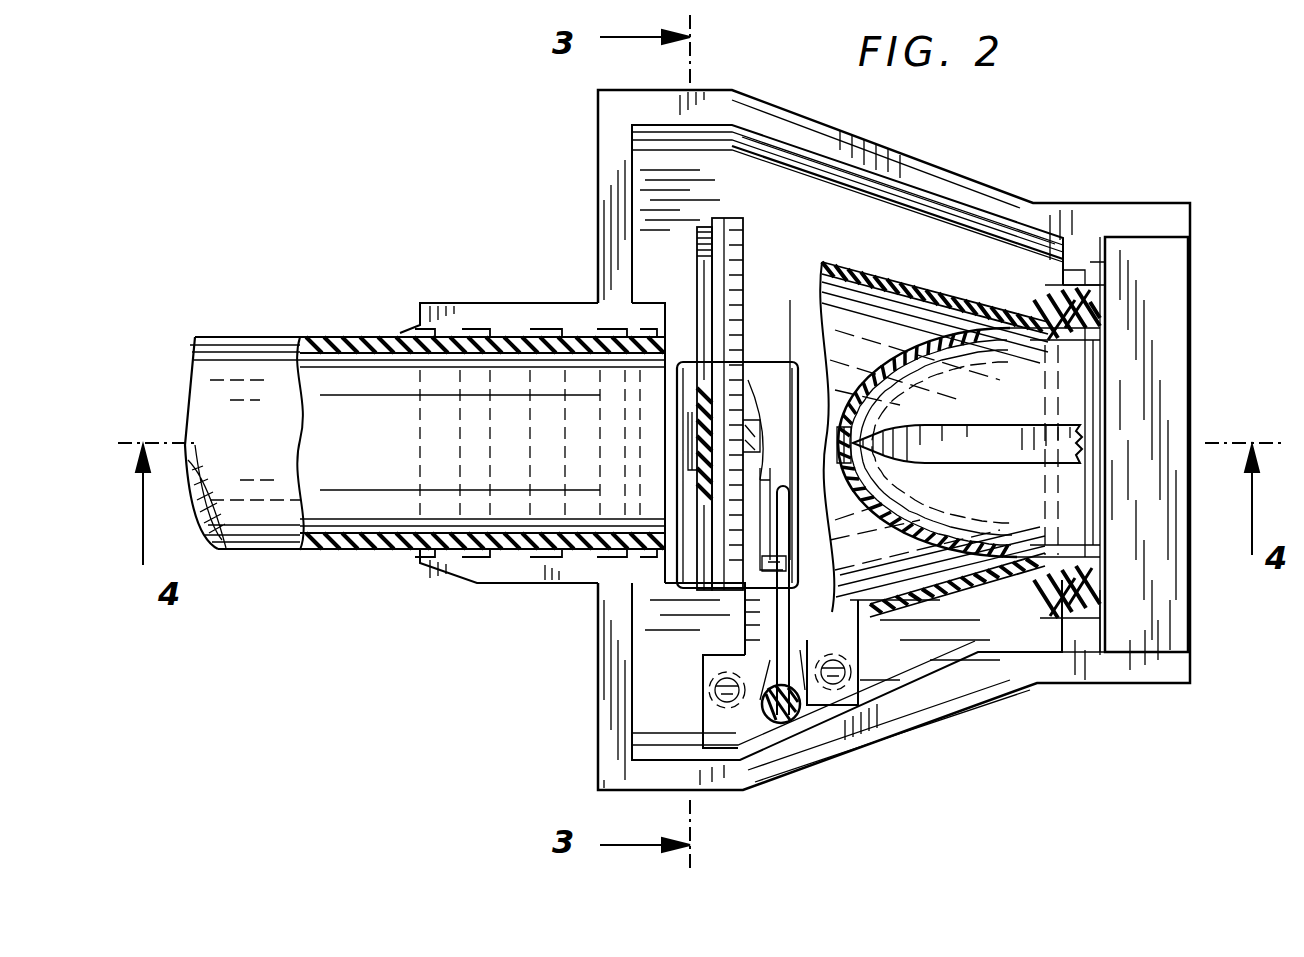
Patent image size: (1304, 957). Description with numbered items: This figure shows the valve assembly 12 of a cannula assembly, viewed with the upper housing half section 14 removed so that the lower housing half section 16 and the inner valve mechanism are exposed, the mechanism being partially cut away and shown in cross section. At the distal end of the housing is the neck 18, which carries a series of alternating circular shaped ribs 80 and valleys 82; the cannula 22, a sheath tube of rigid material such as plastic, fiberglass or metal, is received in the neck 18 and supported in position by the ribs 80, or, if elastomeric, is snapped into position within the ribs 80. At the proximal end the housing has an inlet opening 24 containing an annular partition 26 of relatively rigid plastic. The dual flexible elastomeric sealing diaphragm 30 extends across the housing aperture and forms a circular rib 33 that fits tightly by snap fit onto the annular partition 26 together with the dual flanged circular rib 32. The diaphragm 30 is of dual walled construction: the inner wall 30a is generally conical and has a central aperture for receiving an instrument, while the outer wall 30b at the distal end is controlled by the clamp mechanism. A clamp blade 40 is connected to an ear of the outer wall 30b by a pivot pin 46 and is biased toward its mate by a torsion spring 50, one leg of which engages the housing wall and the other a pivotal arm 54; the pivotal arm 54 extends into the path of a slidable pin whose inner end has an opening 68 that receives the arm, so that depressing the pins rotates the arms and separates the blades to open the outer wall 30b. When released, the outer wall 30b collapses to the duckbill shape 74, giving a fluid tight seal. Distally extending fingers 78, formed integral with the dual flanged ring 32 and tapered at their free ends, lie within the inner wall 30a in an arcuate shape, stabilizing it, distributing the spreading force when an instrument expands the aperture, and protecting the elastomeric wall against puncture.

The valve assembly 12 is at (828, 112).
The upper housing half section 14 is at (1022, 205).
The lower housing half section 16 is at (885, 726).
The neck 18 is at (1168, 683).
The cannula 22 is at (262, 345).
The inlet opening 24 is at (1162, 360).
The annular partition 26 is at (1080, 604).
The dual flexible elastomeric sealing diaphragm 30 is at (958, 272).
The inner wall 30a is at (925, 350).
The outer wall 30b is at (906, 266).
The dual flanged circular rib 32 is at (1105, 334).
The circular rib 33 is at (1048, 298).
The clamp blade 40 is at (730, 260).
The pivot pin 46 is at (783, 385).
The torsion spring 50 is at (790, 528).
The pivotal arm 54 is at (740, 642).
The opening 68 is at (800, 712).
The duckbill shape 74 is at (700, 298).
The fingers 78 is at (1010, 456).
The ribs 80 is at (576, 300).
The valleys 82 is at (482, 302).